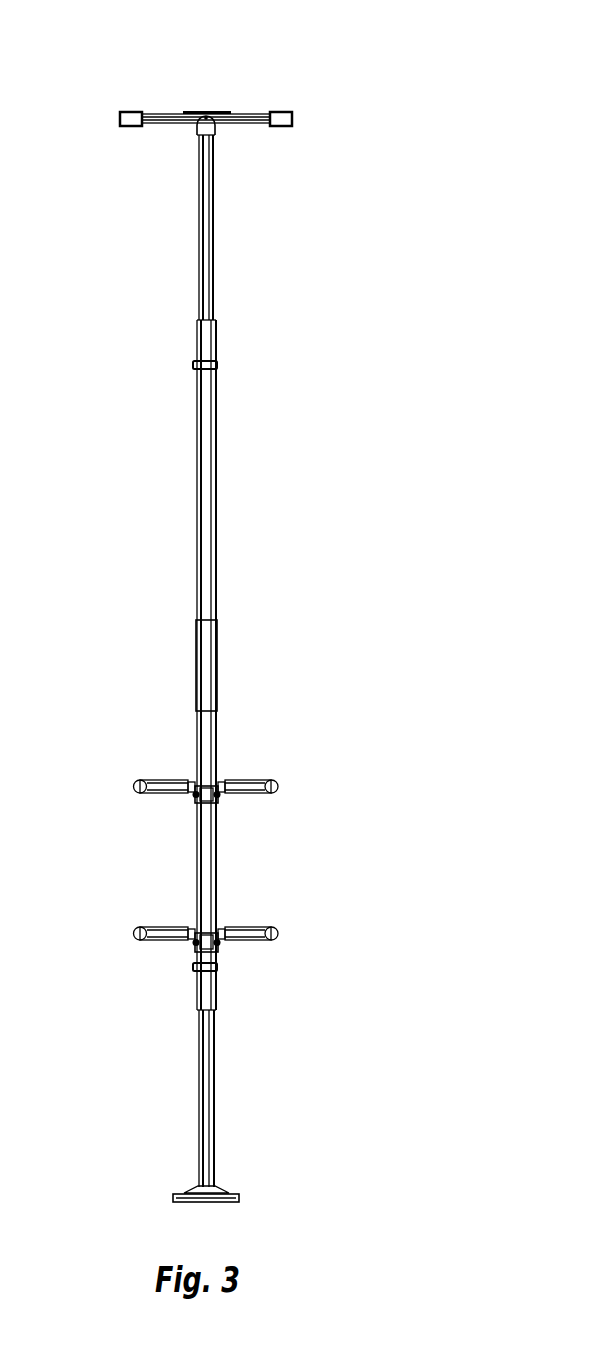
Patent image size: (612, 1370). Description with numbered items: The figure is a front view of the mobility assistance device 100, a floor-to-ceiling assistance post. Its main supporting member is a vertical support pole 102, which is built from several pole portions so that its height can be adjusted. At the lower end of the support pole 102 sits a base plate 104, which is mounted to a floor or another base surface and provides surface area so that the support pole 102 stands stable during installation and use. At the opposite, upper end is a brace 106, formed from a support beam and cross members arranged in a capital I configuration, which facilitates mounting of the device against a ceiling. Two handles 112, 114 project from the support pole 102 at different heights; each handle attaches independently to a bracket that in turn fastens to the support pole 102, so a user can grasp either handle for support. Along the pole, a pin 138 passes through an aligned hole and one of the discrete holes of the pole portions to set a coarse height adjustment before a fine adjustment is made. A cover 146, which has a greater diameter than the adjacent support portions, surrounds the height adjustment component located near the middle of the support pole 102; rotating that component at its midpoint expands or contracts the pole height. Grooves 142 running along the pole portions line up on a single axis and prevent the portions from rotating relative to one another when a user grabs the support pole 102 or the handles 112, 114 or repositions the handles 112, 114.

The mobility assistance device 100 is at (389, 48).
The support pole 102 is at (213, 216).
The base plate 104 is at (239, 1195).
The brace 106 is at (253, 113).
The handle 112 is at (278, 780).
The handle 114 is at (278, 927).
The pin 138 is at (214, 362).
The groove 142 is at (214, 417).
The cover 146 is at (217, 662).